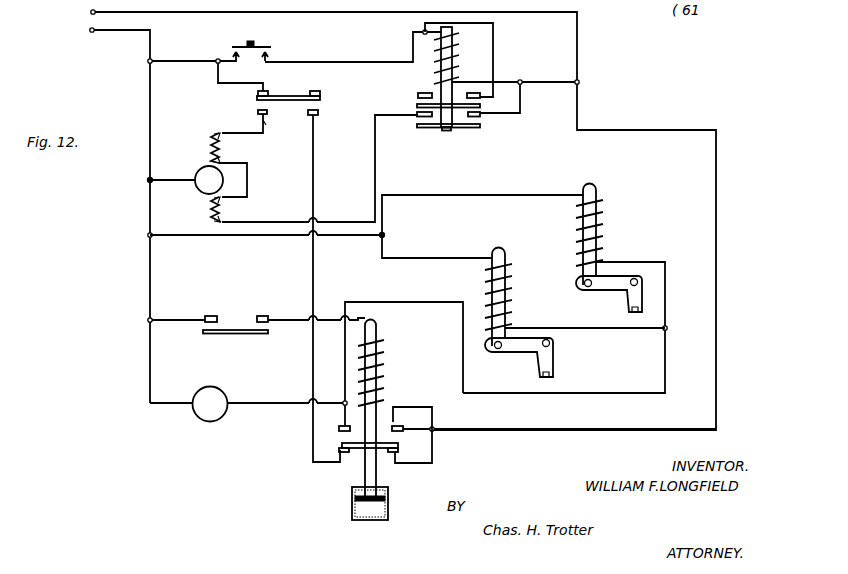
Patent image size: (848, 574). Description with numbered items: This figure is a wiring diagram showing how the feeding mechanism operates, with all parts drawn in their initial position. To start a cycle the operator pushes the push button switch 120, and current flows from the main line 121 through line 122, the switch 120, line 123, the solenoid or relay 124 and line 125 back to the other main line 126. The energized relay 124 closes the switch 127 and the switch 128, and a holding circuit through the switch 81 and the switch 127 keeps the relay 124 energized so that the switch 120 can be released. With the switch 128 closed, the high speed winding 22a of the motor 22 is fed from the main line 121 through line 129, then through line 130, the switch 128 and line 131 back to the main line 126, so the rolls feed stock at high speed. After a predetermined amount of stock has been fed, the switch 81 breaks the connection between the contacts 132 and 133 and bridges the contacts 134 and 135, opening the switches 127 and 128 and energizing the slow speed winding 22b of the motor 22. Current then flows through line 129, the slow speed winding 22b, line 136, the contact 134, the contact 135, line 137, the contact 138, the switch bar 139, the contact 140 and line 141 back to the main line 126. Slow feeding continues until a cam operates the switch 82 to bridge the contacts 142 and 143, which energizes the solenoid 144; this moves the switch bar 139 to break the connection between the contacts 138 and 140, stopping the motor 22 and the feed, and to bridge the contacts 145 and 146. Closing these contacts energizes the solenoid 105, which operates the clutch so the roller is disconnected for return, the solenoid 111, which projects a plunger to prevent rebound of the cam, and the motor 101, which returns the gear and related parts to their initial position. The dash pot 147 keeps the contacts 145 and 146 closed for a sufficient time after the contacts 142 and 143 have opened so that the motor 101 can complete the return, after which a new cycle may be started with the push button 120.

The main line 126 is at (89, 11).
The main line 121 is at (125, 33).
The line 122 is at (184, 63).
The push button switch 120 is at (234, 46).
The line 123 is at (356, 62).
The solenoid or relay 124 is at (458, 53).
The line 125 is at (499, 81).
The line 131 is at (522, 88).
The switch 127 is at (425, 94).
The switch 128 is at (479, 128).
The contact 133 is at (255, 93).
The switch 81 is at (292, 88).
The contact 132 is at (322, 97).
The contact 134 is at (259, 117).
The line 136 is at (265, 127).
The contact 135 is at (316, 115).
The line 137 is at (312, 184).
The line 130 is at (375, 182).
The motor 22 is at (201, 170).
The slow speed winding 22b is at (222, 152).
The high speed winding 22a is at (222, 212).
The line 129 is at (178, 182).
The solenoid 105 is at (598, 233).
The solenoid 111 is at (504, 300).
The contact 142 is at (211, 315).
The contact 143 is at (262, 315).
The switch 82 is at (252, 335).
The solenoid 144 is at (376, 338).
The switch bar 139 is at (378, 443).
The motor 101 is at (227, 410).
The contact 145 is at (405, 428).
The contact 140 is at (414, 448).
The line 141 is at (423, 464).
The contact 146 is at (338, 431).
The contact 138 is at (347, 449).
The dash pot 147 is at (356, 510).